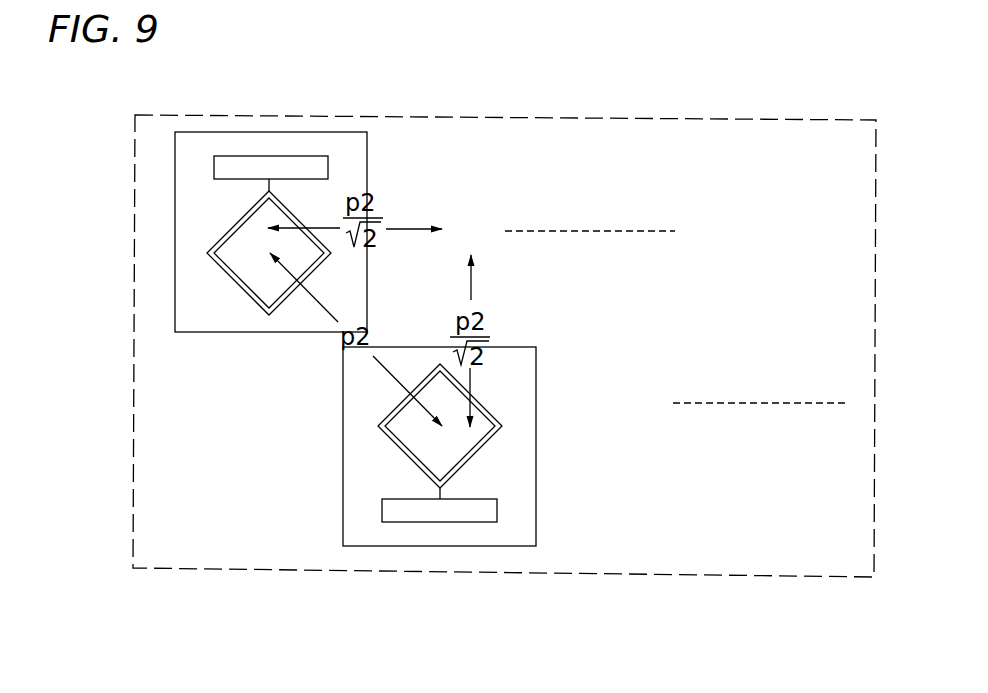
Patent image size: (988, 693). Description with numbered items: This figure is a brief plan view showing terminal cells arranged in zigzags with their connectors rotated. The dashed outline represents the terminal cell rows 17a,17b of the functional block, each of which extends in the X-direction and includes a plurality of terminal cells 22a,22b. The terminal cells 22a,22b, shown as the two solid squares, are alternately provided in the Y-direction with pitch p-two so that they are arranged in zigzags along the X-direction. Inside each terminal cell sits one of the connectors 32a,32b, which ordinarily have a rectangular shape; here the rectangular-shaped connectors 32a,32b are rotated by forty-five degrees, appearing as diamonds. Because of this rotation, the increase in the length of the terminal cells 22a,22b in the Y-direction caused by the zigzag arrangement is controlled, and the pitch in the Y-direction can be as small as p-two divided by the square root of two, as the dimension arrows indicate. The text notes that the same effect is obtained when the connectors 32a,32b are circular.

The terminal cell rows 17a,17b is at (658, 118).
The terminal cells 22a,22b is at (243, 132).
The connectors 32a,32b is at (232, 259).